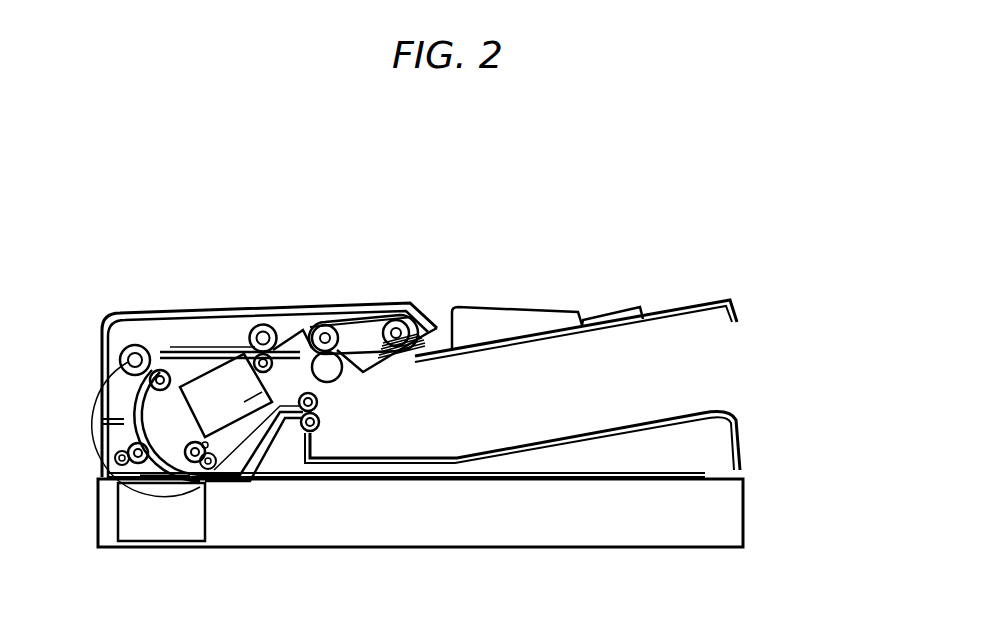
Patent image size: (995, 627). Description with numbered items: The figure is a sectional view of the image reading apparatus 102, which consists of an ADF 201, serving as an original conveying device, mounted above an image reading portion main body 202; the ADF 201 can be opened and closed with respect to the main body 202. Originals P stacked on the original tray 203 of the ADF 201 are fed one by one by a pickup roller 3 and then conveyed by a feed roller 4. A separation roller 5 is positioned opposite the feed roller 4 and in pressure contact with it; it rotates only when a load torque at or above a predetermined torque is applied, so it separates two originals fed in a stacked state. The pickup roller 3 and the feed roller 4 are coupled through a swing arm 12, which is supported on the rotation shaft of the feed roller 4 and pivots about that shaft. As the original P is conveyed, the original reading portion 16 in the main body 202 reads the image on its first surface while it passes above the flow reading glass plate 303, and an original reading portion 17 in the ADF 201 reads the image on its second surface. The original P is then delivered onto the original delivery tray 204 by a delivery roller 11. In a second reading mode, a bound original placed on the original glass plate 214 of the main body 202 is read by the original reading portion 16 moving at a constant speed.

The image reading apparatus 102 is at (506, 258).
The ADF 201 is at (768, 392).
The image reading portion main body 202 is at (768, 513).
The original tray 203 is at (668, 311).
The original delivery tray 204 is at (656, 420).
The original glass plate 214 is at (645, 481).
The flow reading glass plate 303 is at (164, 481).
The pickup roller 3 is at (395, 318).
The feed roller 4 is at (323, 325).
The swing arm 12 is at (362, 325).
The separation roller 5 is at (343, 377).
The original reading portion 17 is at (195, 406).
The delivery roller 11 is at (320, 426).
The original reading portion 16 is at (124, 512).
The original P is at (418, 360).